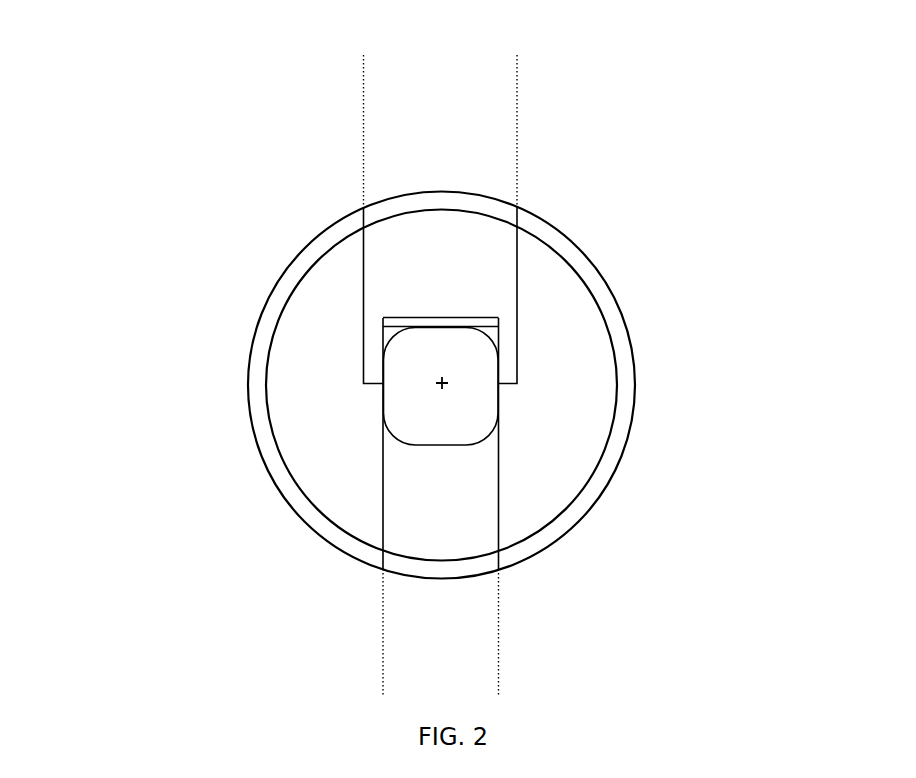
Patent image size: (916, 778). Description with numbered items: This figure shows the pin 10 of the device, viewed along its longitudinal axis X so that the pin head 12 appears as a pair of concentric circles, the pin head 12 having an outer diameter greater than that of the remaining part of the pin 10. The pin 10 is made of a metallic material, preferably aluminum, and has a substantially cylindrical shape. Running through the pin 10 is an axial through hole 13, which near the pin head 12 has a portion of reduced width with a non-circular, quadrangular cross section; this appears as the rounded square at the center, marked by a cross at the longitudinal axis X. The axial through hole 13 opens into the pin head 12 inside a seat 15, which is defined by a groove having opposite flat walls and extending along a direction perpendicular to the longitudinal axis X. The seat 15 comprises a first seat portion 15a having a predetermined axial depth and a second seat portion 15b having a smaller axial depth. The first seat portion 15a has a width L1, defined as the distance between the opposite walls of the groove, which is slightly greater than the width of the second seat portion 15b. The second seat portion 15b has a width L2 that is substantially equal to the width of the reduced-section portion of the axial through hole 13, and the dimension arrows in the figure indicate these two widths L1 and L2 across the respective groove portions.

The pin 10 is at (623, 180).
The pin head 12 is at (636, 398).
The axial through hole 13 is at (422, 417).
The seat 15 is at (532, 381).
The first seat portion 15a is at (453, 498).
The second seat portion 15b is at (427, 243).
The longitudinal axis X is at (442, 383).
The width of the first seat portion L1 is at (516, 85).
The width of the second seat portion L2 is at (498, 635).